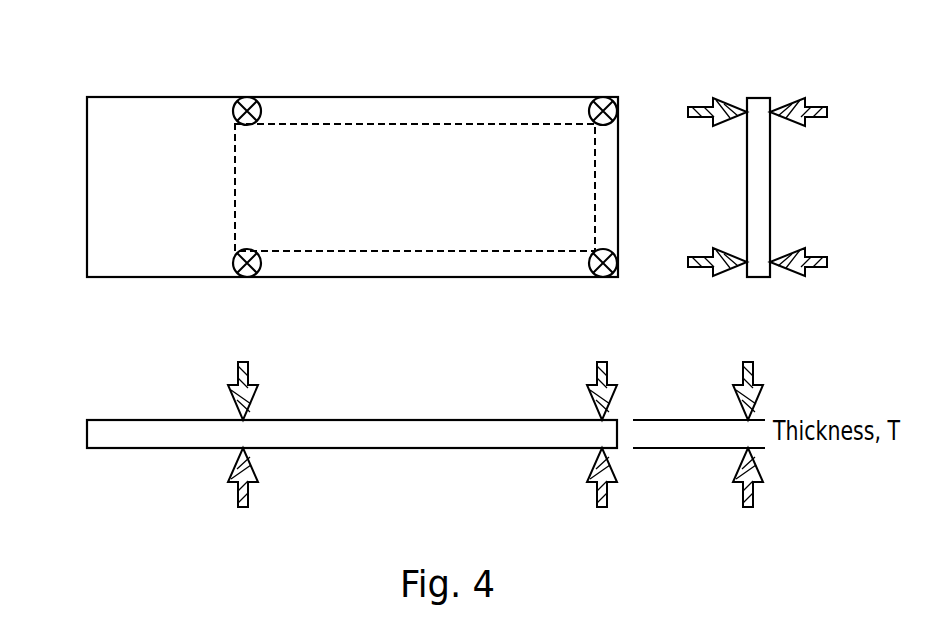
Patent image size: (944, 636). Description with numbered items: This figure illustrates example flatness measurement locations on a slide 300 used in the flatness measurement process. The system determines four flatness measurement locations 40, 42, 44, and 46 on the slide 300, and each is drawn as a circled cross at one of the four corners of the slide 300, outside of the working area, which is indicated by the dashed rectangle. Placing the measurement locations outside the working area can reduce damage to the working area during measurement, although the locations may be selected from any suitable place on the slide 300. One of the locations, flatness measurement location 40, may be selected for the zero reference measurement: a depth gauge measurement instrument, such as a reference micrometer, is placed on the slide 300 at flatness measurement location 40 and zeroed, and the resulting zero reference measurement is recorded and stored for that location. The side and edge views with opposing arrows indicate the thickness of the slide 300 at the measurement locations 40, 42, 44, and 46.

The slide 300 is at (344, 97).
The flatness measurement location 40 is at (246, 277).
The flatness measurement location 42 is at (605, 277).
The flatness measurement location 44 is at (603, 97).
The flatness measurement location 46 is at (246, 97).